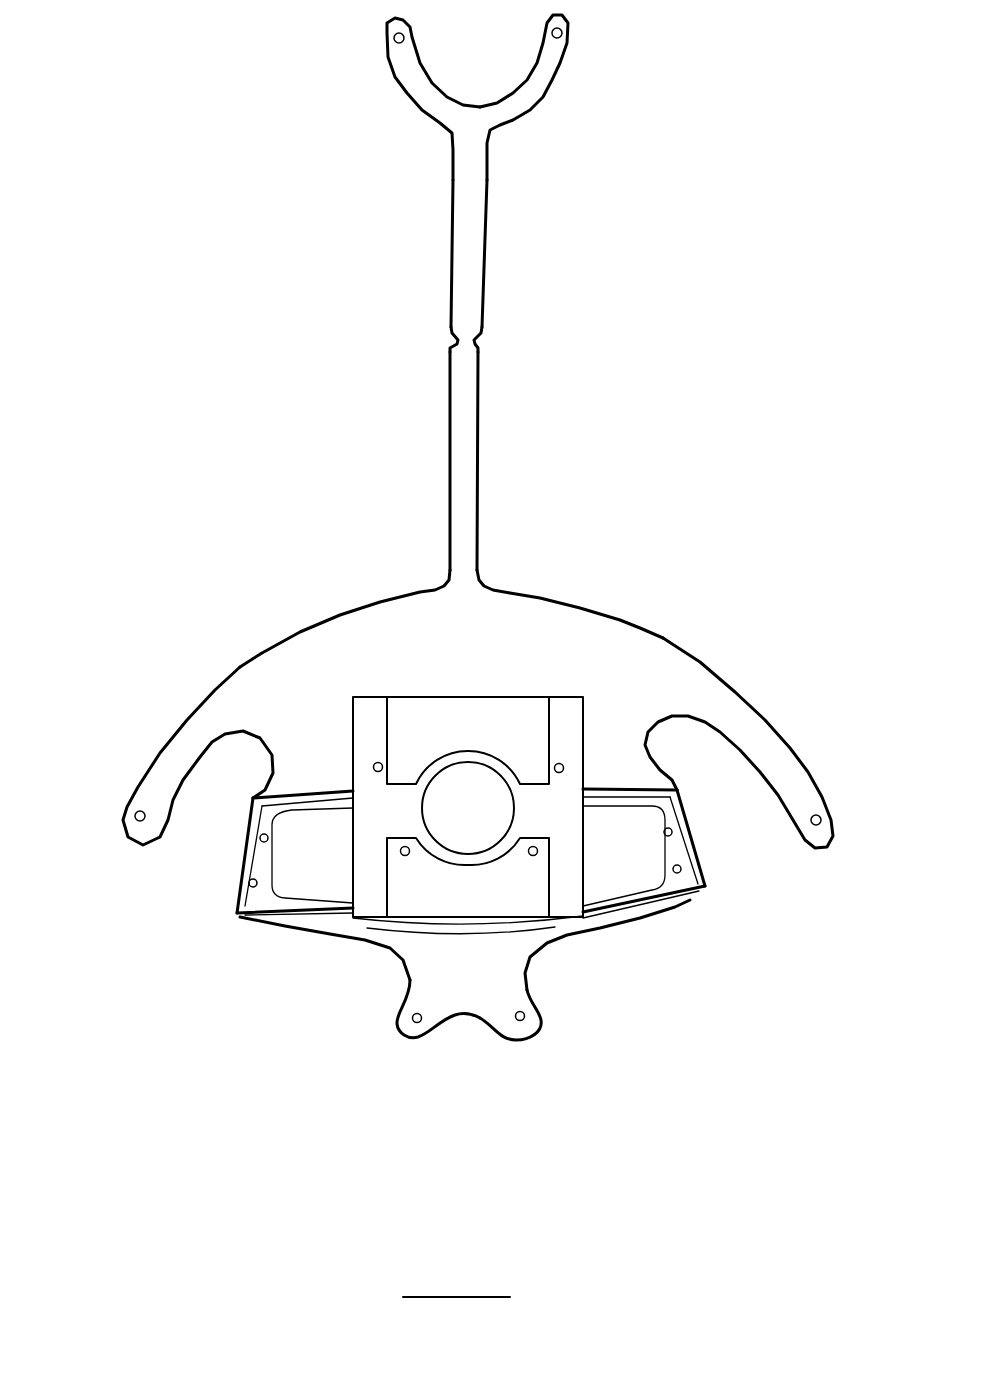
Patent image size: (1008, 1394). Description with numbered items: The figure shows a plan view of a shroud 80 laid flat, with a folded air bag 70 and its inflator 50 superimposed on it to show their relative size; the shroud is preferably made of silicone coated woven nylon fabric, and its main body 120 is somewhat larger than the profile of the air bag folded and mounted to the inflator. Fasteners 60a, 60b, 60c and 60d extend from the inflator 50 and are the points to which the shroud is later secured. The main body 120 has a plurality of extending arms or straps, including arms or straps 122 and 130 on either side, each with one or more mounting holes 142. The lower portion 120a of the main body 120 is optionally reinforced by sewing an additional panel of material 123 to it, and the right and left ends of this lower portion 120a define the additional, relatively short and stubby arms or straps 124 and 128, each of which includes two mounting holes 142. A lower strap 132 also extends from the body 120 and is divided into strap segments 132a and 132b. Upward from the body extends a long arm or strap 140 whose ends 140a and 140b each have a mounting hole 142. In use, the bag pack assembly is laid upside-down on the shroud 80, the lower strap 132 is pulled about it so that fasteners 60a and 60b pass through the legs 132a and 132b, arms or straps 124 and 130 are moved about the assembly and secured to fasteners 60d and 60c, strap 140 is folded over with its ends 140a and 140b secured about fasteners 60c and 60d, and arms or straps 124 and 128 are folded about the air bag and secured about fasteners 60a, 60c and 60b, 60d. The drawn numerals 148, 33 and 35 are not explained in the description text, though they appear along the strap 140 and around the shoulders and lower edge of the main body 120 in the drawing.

The shroud 80 is at (374, 586).
The main body 120 is at (547, 640).
The arm or strap 140 is at (462, 232).
The end of strap 140a is at (400, 78).
The end of strap 140b is at (545, 93).
The notch 148 is at (483, 342).
The shoulder 33 is at (282, 640).
The arm or strap 122 is at (155, 762).
The arm or strap 130 is at (770, 747).
The mounting hole 142 is at (135, 816).
The folded air bag 70 is at (370, 720).
The inflator 50 is at (458, 820).
The fastener 60a is at (405, 853).
The fastener 60b is at (538, 851).
The fastener 60c is at (383, 767).
The fastener 60d is at (564, 766).
The lower portion of the main body 120a is at (230, 860).
The arm or strap 128 is at (683, 838).
The arm or strap 124 is at (233, 908).
The additional panel of material 123 is at (303, 868).
The lower edge 35 is at (268, 922).
The lower strap 132 is at (482, 985).
The strap segment 132a is at (398, 1020).
The strap segment 132b is at (530, 1030).